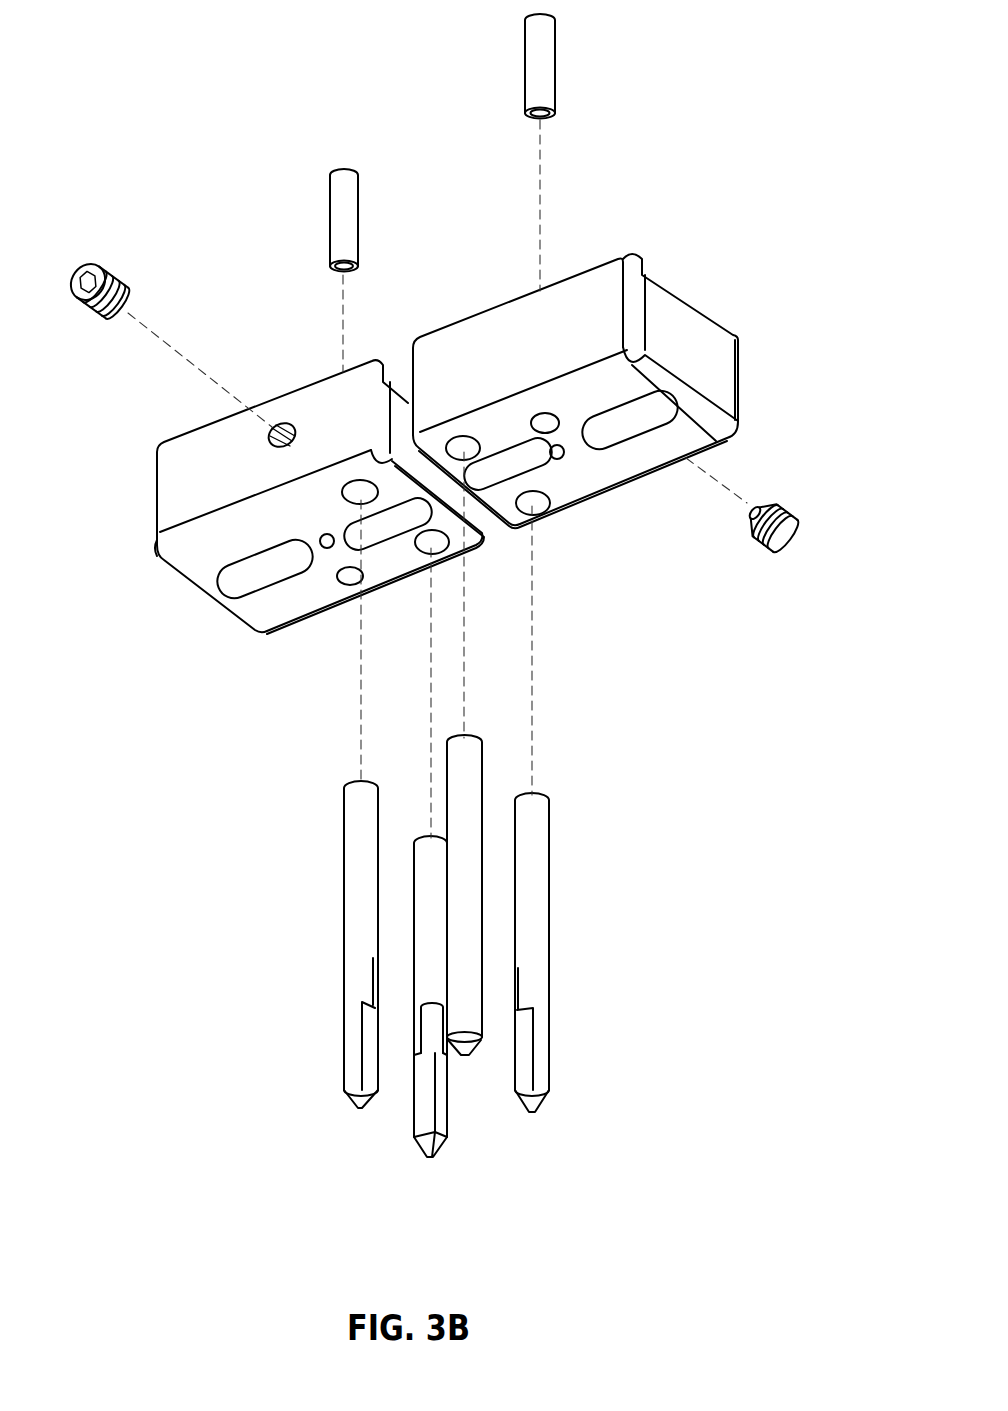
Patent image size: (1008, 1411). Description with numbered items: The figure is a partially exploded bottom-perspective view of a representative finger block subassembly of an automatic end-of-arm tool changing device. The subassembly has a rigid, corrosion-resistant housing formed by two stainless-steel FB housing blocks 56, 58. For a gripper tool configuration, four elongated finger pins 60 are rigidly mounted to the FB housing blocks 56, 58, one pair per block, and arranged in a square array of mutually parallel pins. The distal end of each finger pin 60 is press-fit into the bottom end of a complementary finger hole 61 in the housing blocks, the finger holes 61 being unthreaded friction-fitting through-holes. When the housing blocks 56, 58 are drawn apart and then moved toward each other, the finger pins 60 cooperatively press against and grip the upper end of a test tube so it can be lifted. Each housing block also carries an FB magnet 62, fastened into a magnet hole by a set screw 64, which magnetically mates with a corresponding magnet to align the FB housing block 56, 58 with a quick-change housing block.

The FB housing block 56 is at (287, 403).
The FB housing block 58 is at (477, 328).
The finger pin 60 is at (353, 1107).
The finger hole 61 is at (355, 493).
The FB magnet 62 is at (330, 198).
The set screw 64 is at (118, 283).